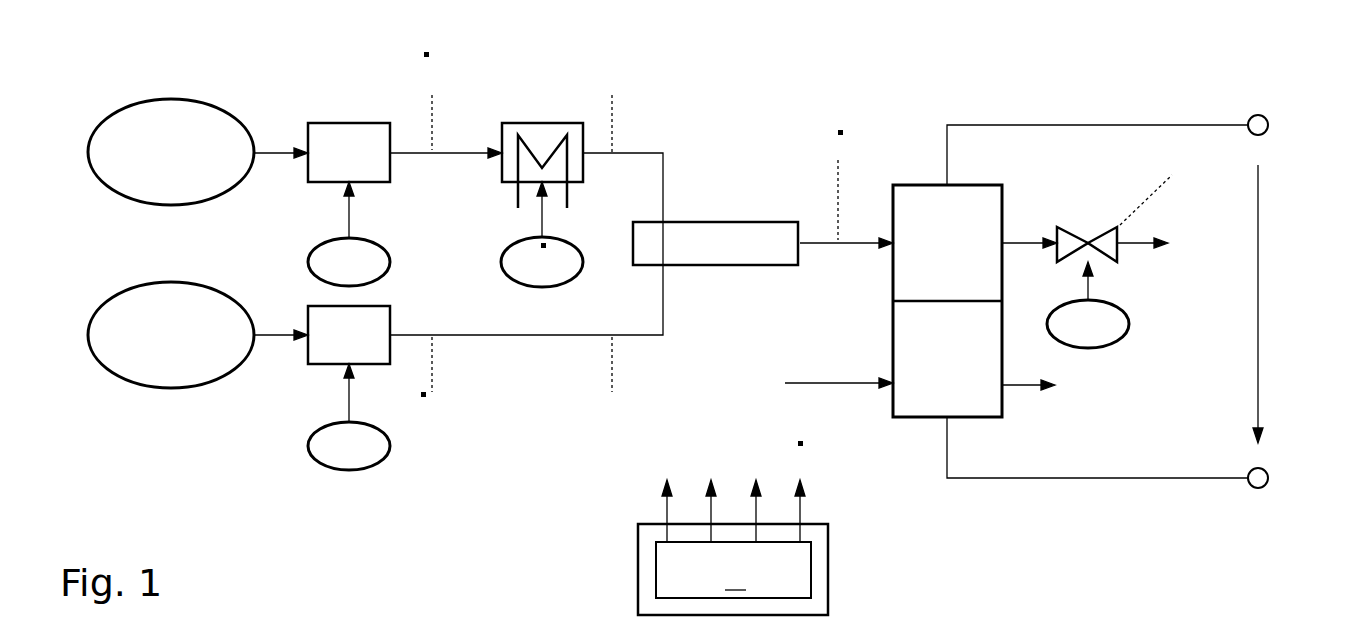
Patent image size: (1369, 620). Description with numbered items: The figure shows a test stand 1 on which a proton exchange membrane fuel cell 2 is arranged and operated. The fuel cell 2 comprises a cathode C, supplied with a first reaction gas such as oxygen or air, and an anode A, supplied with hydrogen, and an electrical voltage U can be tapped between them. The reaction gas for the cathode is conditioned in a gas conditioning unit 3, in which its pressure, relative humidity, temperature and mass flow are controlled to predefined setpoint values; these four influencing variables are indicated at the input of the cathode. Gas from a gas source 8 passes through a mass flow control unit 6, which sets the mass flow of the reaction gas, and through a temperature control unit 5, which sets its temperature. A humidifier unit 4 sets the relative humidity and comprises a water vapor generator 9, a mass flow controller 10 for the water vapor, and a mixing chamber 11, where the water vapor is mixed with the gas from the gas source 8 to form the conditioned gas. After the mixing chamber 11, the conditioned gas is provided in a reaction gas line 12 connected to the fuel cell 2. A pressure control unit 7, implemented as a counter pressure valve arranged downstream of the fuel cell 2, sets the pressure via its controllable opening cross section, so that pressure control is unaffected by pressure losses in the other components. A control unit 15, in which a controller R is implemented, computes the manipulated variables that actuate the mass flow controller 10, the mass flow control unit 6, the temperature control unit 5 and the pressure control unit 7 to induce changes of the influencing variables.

The test stand 1 is at (503, 462).
The fuel cell 2 is at (932, 183).
The gas conditioning unit 3 is at (692, 100).
The humidifier unit 4 is at (285, 433).
The temperature control unit 5 is at (534, 121).
The mass flow control unit 6 is at (335, 122).
The pressure control unit 7 is at (1076, 232).
The gas source 8 is at (183, 166).
The water vapor generator 9 is at (183, 349).
The mass flow controller for the water vapor 10 is at (320, 366).
The mixing chamber 11 is at (755, 220).
The reaction gas line 12 is at (822, 246).
The control unit 15 is at (818, 583).